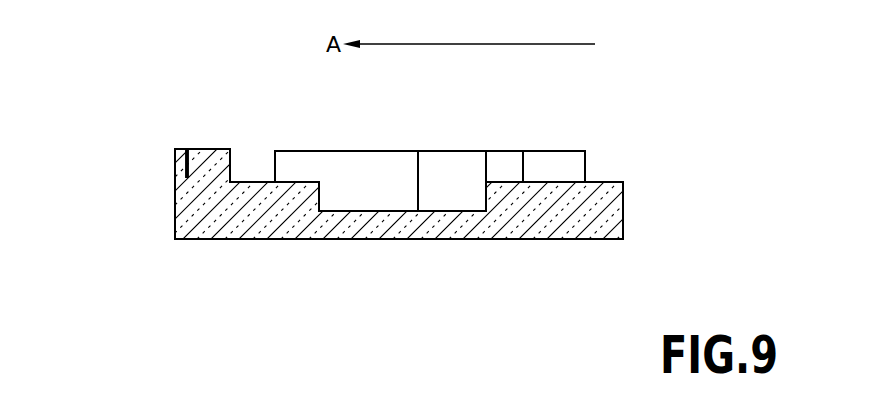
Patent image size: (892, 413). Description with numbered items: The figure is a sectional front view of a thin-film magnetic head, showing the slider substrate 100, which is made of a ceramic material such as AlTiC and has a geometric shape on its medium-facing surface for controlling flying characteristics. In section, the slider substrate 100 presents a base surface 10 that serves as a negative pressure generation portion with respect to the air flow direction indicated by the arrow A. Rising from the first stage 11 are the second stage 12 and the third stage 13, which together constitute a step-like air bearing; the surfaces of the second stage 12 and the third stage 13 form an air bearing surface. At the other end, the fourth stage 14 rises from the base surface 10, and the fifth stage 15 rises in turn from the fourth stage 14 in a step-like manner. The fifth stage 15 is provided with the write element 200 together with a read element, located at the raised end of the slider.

The base surface 10 is at (403, 210).
The first stage 11 is at (597, 181).
The second stage 12 is at (548, 151).
The third stage 13 is at (535, 166).
The fourth stage 14 is at (265, 181).
The fifth stage 15 is at (215, 148).
The slider substrate 100 is at (213, 240).
The write element 200 is at (186, 173).